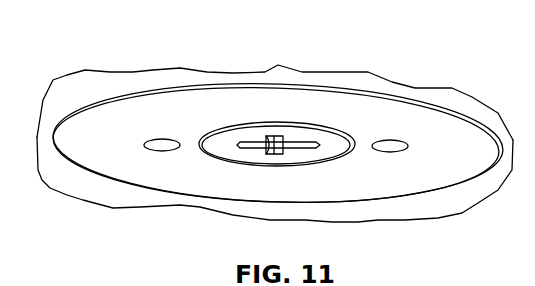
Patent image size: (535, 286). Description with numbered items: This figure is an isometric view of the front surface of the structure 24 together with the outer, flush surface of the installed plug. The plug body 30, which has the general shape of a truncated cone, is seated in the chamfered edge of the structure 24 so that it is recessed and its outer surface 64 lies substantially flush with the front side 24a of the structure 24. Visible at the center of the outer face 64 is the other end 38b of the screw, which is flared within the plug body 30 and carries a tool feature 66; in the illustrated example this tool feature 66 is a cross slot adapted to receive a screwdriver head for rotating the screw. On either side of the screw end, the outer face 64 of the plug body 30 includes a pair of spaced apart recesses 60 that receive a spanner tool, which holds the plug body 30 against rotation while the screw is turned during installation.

The structure 24 is at (57, 170).
The front side of the structure 24a is at (82, 86).
The plug body 30 is at (175, 113).
The outer surface of the plug body 64 is at (423, 134).
The other end of the screw 38b is at (297, 138).
The tool feature 66 is at (258, 128).
The recesses 60 is at (153, 150).